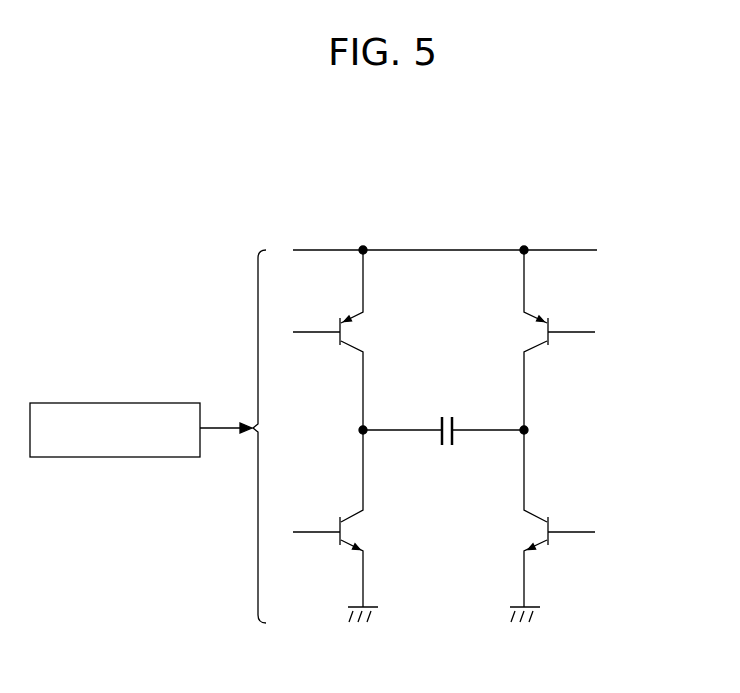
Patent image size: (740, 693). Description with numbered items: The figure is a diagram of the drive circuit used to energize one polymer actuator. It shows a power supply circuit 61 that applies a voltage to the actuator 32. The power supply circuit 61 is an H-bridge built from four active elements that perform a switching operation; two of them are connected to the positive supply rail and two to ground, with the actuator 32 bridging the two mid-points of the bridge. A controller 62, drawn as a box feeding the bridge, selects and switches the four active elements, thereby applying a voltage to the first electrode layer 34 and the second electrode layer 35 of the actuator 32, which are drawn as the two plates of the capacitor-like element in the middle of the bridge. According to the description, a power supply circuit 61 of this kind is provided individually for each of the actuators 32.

The power supply circuit 61 is at (495, 223).
The controller 62 is at (155, 403).
The actuator 32 is at (445, 415).
The first electrode layer 34 is at (441, 446).
The second electrode layer 35 is at (456, 446).